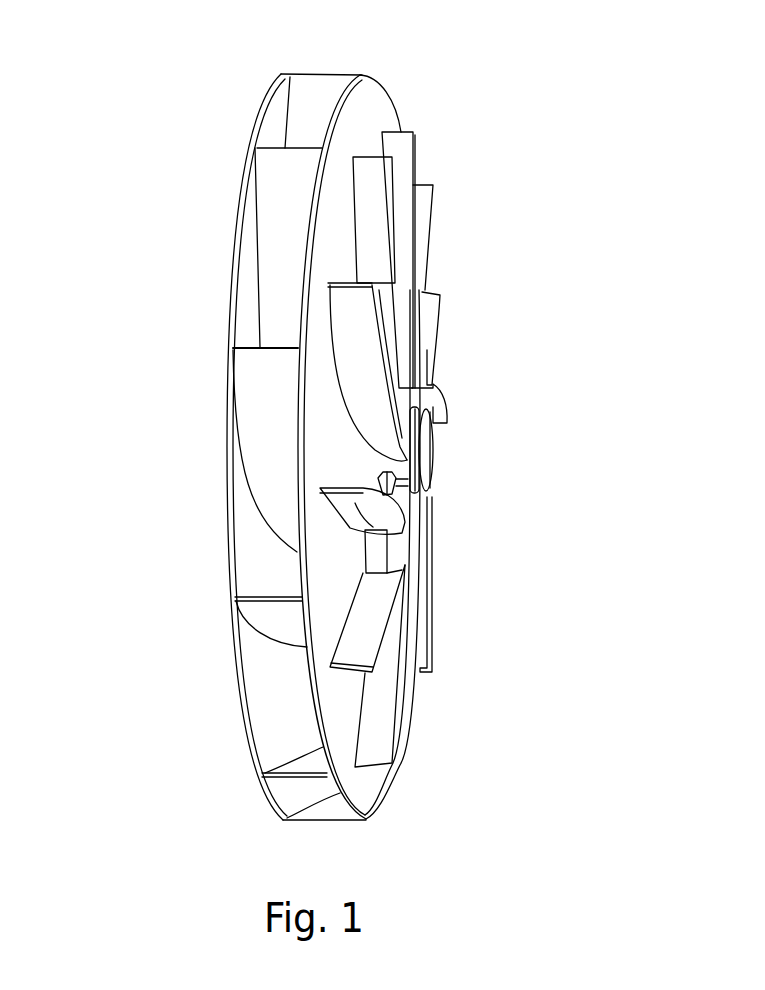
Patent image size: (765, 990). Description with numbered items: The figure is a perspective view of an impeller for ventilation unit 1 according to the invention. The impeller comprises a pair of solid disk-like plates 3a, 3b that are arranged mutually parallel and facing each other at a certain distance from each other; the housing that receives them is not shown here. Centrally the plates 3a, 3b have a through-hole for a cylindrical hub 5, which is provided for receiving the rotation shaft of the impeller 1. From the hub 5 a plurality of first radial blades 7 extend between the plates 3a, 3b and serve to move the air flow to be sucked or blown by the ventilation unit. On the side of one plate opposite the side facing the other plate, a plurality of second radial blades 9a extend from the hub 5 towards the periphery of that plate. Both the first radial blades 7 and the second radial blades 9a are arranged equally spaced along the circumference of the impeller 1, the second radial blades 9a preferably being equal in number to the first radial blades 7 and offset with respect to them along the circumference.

The impeller for ventilation unit 1 is at (481, 184).
The plate 3a is at (367, 793).
The plate 3b is at (272, 92).
The cylindrical hub 5 is at (433, 444).
The first radial blades 7 is at (277, 192).
The second radial blades 9a is at (357, 320).